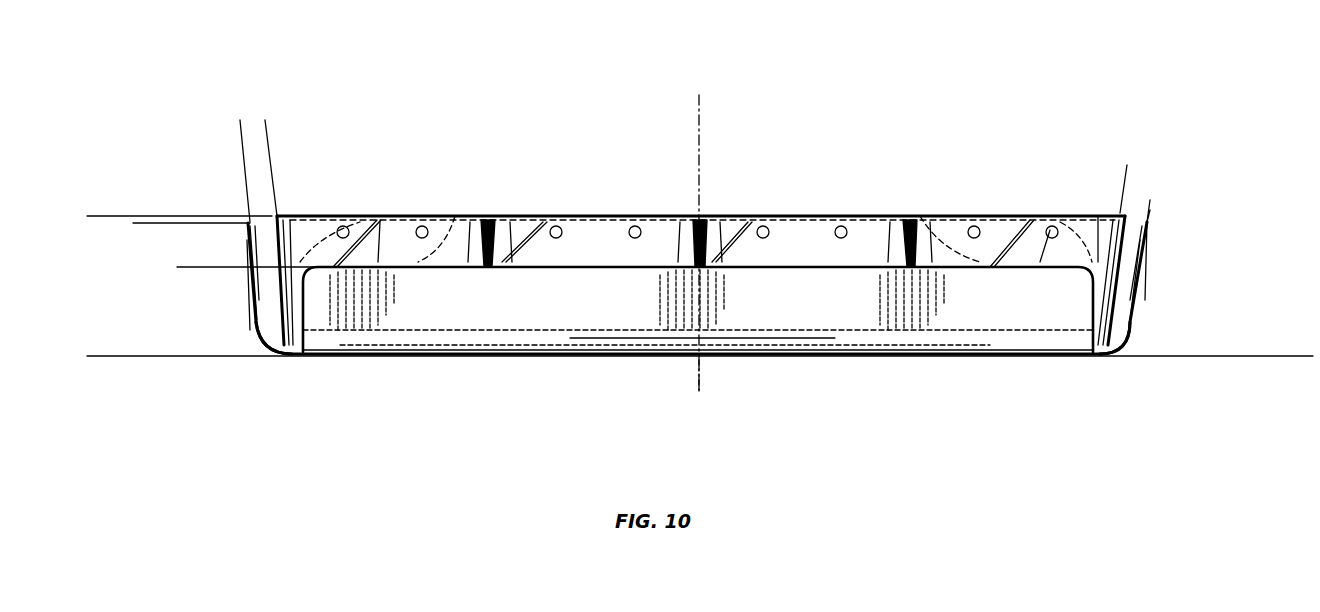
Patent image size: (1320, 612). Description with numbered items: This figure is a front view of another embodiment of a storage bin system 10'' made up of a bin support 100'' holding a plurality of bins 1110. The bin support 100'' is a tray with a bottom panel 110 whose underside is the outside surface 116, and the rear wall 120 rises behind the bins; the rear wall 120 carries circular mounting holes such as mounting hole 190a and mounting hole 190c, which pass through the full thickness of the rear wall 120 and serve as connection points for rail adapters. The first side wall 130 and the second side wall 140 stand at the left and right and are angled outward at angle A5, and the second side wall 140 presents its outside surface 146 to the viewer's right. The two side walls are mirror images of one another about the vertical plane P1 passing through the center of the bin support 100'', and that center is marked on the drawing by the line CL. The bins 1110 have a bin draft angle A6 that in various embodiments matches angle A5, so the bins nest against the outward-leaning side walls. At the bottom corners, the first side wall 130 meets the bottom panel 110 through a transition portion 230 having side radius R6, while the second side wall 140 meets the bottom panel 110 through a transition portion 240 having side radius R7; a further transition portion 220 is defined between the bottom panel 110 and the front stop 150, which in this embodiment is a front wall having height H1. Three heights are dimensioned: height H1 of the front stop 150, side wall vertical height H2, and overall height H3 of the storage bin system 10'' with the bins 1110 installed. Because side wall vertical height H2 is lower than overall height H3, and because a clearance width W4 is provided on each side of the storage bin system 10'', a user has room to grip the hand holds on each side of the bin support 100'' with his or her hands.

The storage bin system 10'' is at (1042, 125).
The bin support 100'' is at (698, 390).
The bottom panel 110 is at (890, 358).
The outside surface 116 is at (720, 358).
The rear wall 120 is at (605, 216).
The first side wall 130 is at (244, 340).
The second side wall 140 is at (1138, 322).
The outside surface 146 is at (1158, 233).
The front stop 150 is at (402, 300).
The mounting hole 190a is at (455, 216).
The mounting hole 190c is at (920, 216).
The transition portion 220 is at (520, 340).
The transition portion 230 is at (270, 352).
The transition portion 240 is at (1145, 354).
The bins 1110 is at (383, 216).
The side radius R6 is at (275, 333).
The side radius R7 is at (1118, 335).
The vertical plane P1 is at (700, 128).
The center line CL is at (698, 400).
The height H1 is at (183, 267).
The side wall vertical height H2 is at (137, 223).
The overall height H3 is at (95, 216).
The clearance width W4 is at (292, 128).
The angle A5 is at (1267, 356).
The bin draft angle A6 is at (1127, 165).